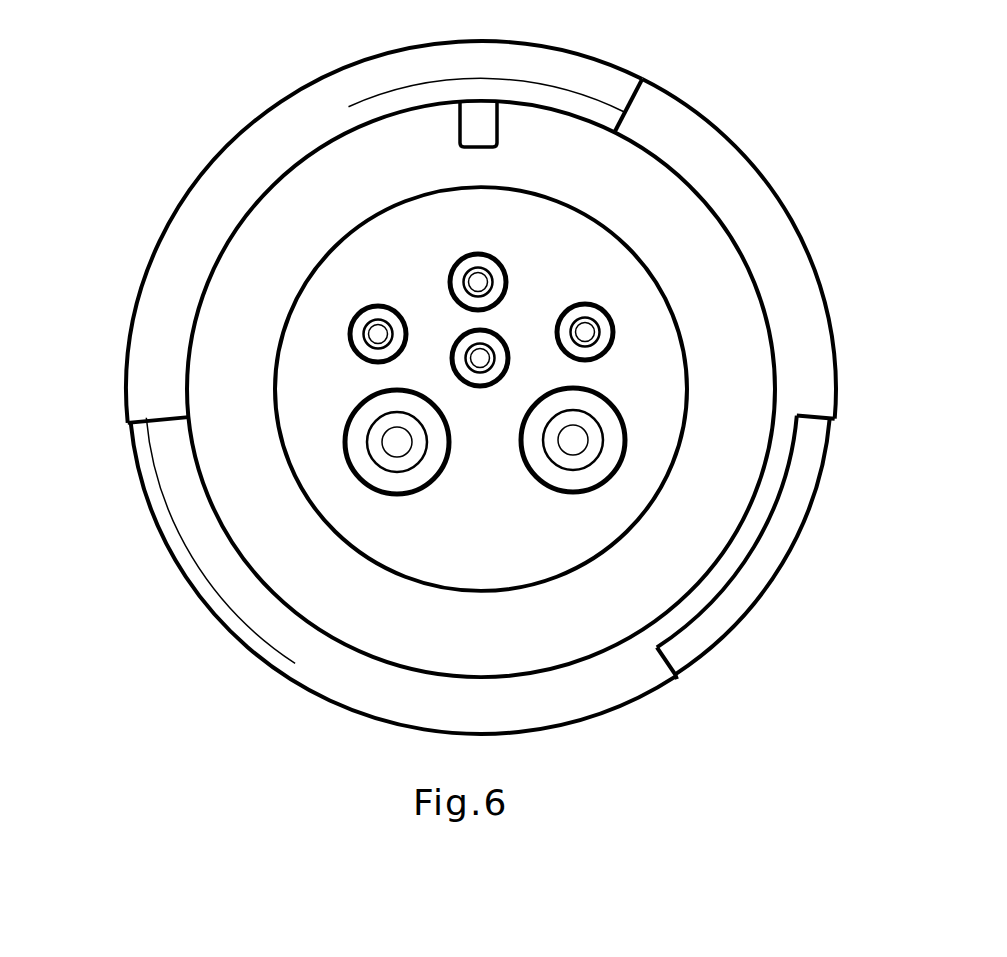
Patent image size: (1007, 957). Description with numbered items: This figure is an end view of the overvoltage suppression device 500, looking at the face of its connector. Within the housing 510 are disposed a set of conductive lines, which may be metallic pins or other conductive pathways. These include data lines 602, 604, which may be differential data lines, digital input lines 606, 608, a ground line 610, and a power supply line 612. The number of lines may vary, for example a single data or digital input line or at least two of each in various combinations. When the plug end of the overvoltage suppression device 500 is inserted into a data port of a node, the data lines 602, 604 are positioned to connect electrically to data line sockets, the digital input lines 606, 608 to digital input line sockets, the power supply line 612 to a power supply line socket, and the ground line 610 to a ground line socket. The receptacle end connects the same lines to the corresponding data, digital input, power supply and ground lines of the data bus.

The overvoltage suppression device 500 is at (112, 186).
The housing 510 is at (125, 343).
The data line 602 is at (478, 262).
The data line 604 is at (503, 335).
The digital input line 606 is at (378, 319).
The digital input line 608 is at (597, 332).
The ground line 610 is at (366, 442).
The power supply line 612 is at (604, 441).